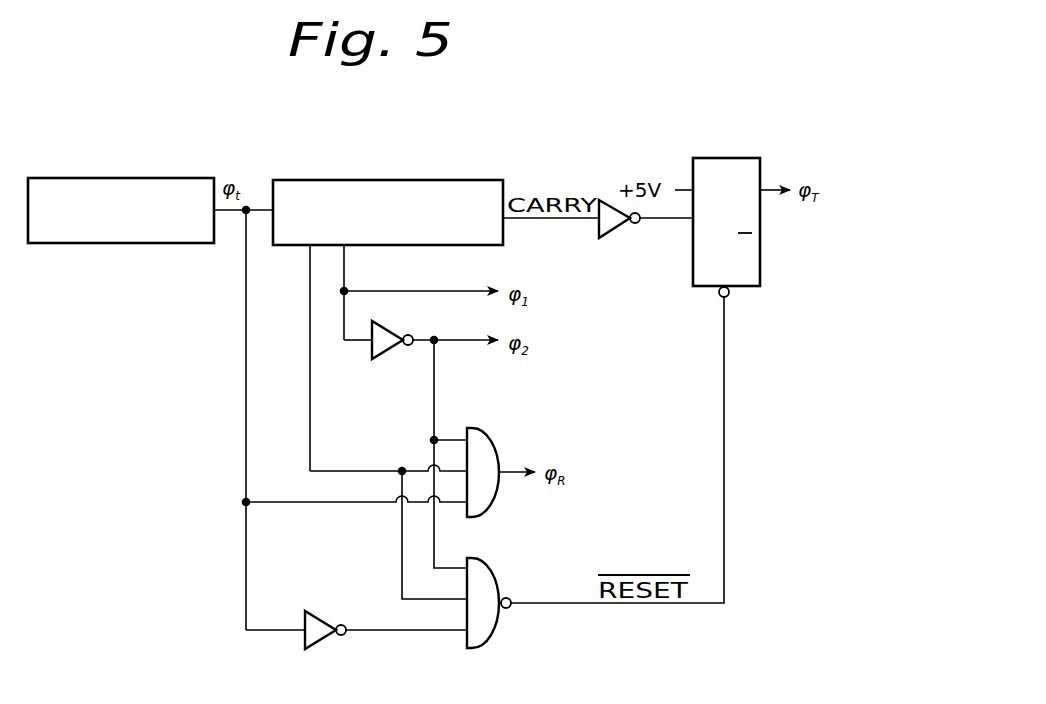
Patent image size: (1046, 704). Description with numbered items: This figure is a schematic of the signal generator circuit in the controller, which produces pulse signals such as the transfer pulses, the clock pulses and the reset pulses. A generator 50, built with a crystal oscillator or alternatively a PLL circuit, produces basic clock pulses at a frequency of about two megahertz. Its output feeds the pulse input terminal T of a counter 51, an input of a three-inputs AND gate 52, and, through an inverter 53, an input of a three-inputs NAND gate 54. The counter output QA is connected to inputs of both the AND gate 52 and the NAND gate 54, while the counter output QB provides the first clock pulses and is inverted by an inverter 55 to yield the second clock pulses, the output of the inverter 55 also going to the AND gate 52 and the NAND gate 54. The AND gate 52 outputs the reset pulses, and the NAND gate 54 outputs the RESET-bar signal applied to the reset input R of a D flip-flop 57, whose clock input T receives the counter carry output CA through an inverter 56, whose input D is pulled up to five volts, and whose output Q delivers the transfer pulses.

The generator 50 is at (118, 178).
The counter 51 is at (462, 180).
The three-inputs AND gate 52 is at (496, 450).
The inverter 53 is at (314, 614).
The three-inputs NAND gate 54 is at (496, 580).
The inverter 55 is at (384, 357).
The inverter 56 is at (599, 196).
The D flip-flop 57 is at (762, 166).